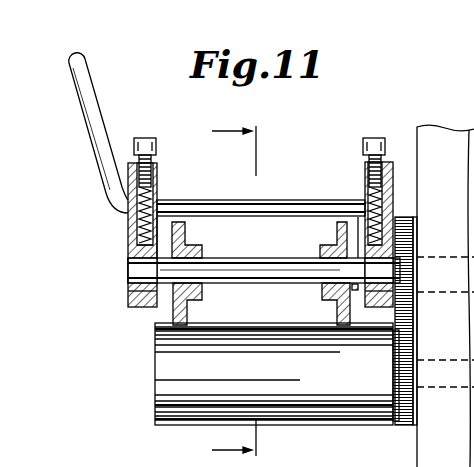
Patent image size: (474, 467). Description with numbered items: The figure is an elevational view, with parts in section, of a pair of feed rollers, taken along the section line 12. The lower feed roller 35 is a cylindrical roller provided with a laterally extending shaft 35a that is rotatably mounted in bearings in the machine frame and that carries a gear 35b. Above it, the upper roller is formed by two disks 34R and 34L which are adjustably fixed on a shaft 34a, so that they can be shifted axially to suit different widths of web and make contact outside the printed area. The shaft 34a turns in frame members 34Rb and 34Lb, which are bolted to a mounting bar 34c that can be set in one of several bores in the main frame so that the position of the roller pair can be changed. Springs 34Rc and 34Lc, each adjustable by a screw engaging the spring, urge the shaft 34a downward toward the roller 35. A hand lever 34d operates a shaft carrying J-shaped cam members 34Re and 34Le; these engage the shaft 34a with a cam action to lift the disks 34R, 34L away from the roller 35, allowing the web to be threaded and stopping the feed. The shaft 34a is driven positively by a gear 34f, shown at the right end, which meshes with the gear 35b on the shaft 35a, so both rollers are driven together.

The section line 12- 12 is at (234, 285).
The shaft 34a is at (458, 257).
The mounting bar 34c is at (240, 292).
The hand lever 34d is at (80, 91).
The gear 34f is at (398, 222).
The disk 34L is at (325, 250).
The frame member 34Lb is at (385, 182).
The spring 34Lc is at (368, 200).
The J-shaped cam member 34Le is at (356, 292).
The disk 34R is at (196, 250).
The frame member 34Rb is at (128, 233).
The spring 34Rc is at (153, 200).
The J-shaped cam member 34Re is at (160, 308).
The roller 35 is at (296, 417).
The shaft 35a is at (458, 360).
The gear 35b is at (405, 425).